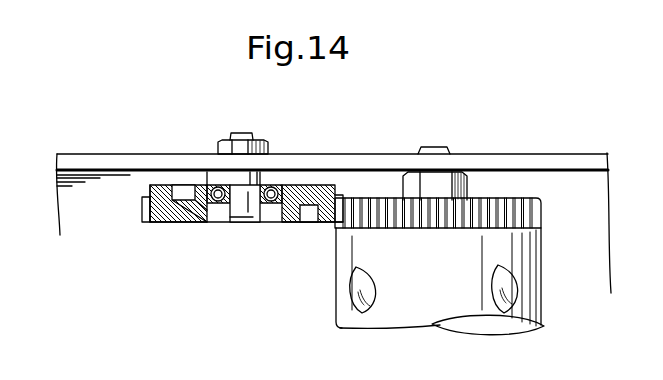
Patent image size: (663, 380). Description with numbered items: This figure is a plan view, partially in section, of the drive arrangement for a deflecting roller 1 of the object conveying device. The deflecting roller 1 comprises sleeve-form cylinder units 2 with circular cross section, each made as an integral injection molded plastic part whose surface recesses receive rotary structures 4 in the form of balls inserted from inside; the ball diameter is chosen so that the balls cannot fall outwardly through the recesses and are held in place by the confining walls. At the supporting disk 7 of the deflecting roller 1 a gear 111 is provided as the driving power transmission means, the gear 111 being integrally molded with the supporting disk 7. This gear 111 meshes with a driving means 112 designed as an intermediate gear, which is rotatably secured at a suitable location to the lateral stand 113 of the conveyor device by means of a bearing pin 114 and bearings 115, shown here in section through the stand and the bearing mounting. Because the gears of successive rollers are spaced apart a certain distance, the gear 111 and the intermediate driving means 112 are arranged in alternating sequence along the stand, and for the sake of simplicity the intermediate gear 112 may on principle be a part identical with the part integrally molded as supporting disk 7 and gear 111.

The deflecting roller 1 is at (550, 274).
The cylinder unit 2 is at (336, 287).
The rotary structure 4 is at (358, 285).
The supporting disk 7 is at (489, 196).
The gear 111 is at (528, 210).
The driving means 112 is at (165, 232).
The lateral stand 113 is at (97, 155).
The bearing pin 114 is at (238, 218).
The bearing 115 is at (273, 186).